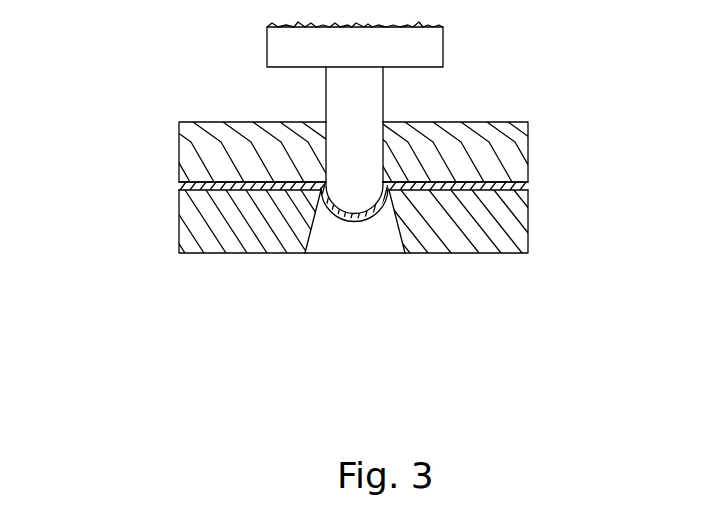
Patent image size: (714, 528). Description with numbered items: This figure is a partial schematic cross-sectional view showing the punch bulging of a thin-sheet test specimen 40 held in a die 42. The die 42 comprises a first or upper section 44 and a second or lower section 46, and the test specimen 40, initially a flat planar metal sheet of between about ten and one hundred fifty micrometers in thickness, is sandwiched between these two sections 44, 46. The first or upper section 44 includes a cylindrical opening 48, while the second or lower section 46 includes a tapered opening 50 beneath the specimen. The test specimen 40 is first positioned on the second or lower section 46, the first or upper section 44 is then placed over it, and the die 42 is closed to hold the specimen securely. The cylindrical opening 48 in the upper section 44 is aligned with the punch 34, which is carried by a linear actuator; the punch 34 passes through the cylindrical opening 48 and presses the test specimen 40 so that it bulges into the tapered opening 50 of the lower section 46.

The punch 34 is at (375, 103).
The test specimen 40 is at (507, 184).
The die 42 is at (132, 149).
The first or upper section 44 is at (513, 145).
The second or lower section 46 is at (505, 227).
The cylindrical opening 48 is at (327, 149).
The tapered opening 50 is at (345, 228).